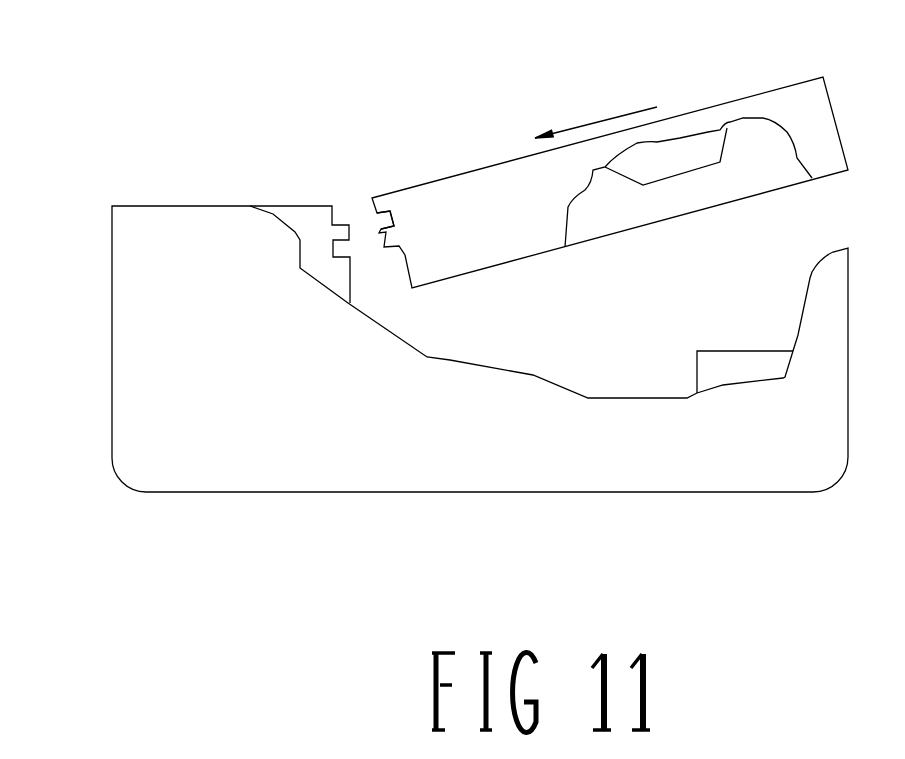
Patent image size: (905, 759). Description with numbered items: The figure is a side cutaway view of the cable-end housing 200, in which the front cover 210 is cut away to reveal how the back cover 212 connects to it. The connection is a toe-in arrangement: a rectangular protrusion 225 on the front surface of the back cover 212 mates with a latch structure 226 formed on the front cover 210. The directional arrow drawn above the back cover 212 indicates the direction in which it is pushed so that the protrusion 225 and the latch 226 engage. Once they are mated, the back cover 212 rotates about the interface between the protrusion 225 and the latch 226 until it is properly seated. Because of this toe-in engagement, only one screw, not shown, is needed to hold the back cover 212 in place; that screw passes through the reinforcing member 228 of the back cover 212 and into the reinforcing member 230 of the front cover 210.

The cable-end housing 200 is at (435, 302).
The front cover 210 is at (480, 350).
The back cover 212 is at (608, 155).
The rectangular protrusion 225 is at (377, 214).
The latch structure 226 is at (340, 247).
The reinforcing member 228 is at (698, 150).
The reinforcing member 230 is at (742, 368).